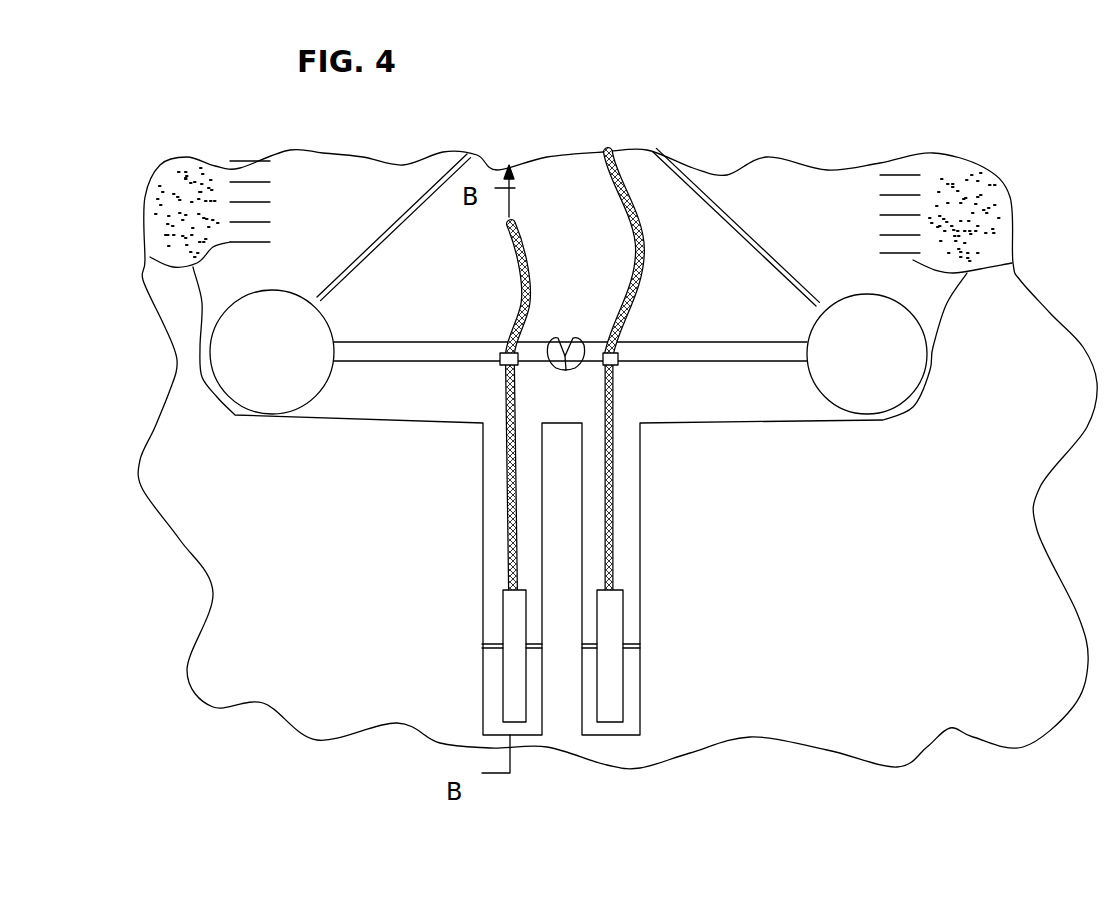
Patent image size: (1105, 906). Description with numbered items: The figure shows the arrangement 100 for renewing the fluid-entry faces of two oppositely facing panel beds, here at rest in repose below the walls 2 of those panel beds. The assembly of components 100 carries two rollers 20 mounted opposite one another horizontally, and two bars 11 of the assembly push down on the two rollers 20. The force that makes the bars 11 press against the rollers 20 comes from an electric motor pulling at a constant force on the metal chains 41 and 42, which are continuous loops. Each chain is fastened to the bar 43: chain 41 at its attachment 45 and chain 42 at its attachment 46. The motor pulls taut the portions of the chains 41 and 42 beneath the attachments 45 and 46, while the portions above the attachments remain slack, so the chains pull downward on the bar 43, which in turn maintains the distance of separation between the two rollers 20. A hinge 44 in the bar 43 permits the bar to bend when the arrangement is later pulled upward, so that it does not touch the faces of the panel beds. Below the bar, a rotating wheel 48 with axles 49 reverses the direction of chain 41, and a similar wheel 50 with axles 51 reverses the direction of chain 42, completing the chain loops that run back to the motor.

The assembly of components 100 is at (357, 217).
The walls 2 is at (278, 230).
The bars 11 is at (398, 230).
The rollers 20 is at (254, 291).
The bar 43 is at (414, 338).
The chain 41 is at (522, 236).
The chain 42 is at (641, 210).
The hinge 44 is at (564, 334).
The attachment 45 is at (498, 366).
The attachment 46 is at (620, 366).
The rotating wheel 48 is at (529, 592).
The axles 49 is at (490, 640).
The wheel 50 is at (627, 592).
The axles 51 is at (588, 640).